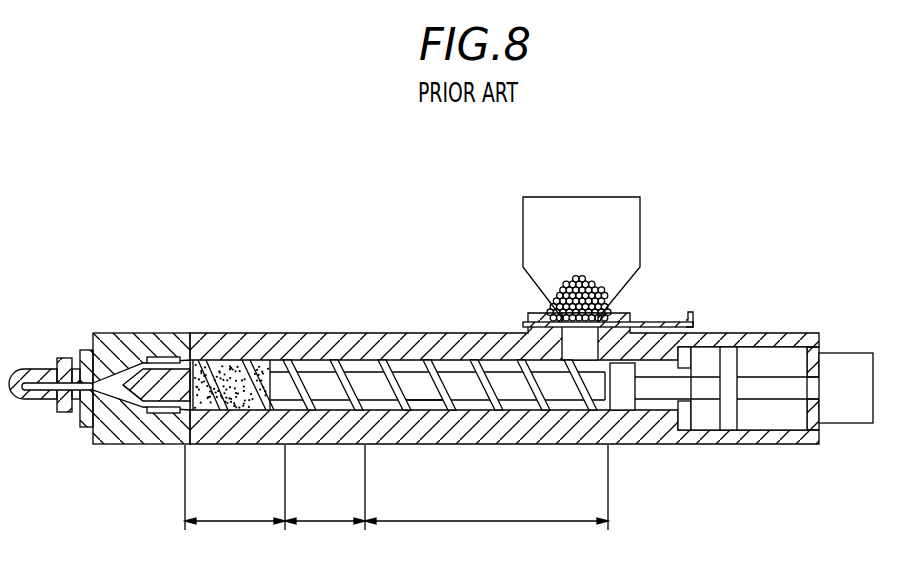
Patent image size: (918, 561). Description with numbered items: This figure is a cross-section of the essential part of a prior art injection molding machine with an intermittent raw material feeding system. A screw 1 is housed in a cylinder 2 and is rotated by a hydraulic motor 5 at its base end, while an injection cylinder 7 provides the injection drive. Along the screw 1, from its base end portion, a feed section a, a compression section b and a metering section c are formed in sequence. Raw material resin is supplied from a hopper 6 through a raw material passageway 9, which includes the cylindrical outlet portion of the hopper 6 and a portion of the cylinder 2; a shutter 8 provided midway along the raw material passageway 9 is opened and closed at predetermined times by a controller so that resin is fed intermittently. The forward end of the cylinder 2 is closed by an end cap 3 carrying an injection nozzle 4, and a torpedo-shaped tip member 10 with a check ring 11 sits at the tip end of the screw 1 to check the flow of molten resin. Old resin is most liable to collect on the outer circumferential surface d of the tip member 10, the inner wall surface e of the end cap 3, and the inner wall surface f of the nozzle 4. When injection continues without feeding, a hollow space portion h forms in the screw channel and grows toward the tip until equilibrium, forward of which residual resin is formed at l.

The screw 1 is at (405, 380).
The cylinder 2 is at (290, 347).
The end cap 3 is at (103, 333).
The injection nozzle 4 is at (38, 368).
The hydraulic motor 5 is at (836, 362).
The hopper 6 is at (623, 217).
The injection cylinder 7 is at (773, 333).
The shutter 8 is at (663, 321).
The raw material passageway 9 is at (585, 340).
The torpedo-shaped tip member 10 is at (132, 375).
The check ring 11 is at (163, 410).
The residual resin l is at (220, 365).
The inner wall surface of the nozzle f is at (33, 392).
The inner wall surface of the end cap e is at (103, 397).
The outer circumferential surface of the tip member d is at (128, 412).
The hollow space portion h is at (427, 408).
The feed section a is at (486, 487).
The compression section b is at (325, 487).
The metering section c is at (235, 487).